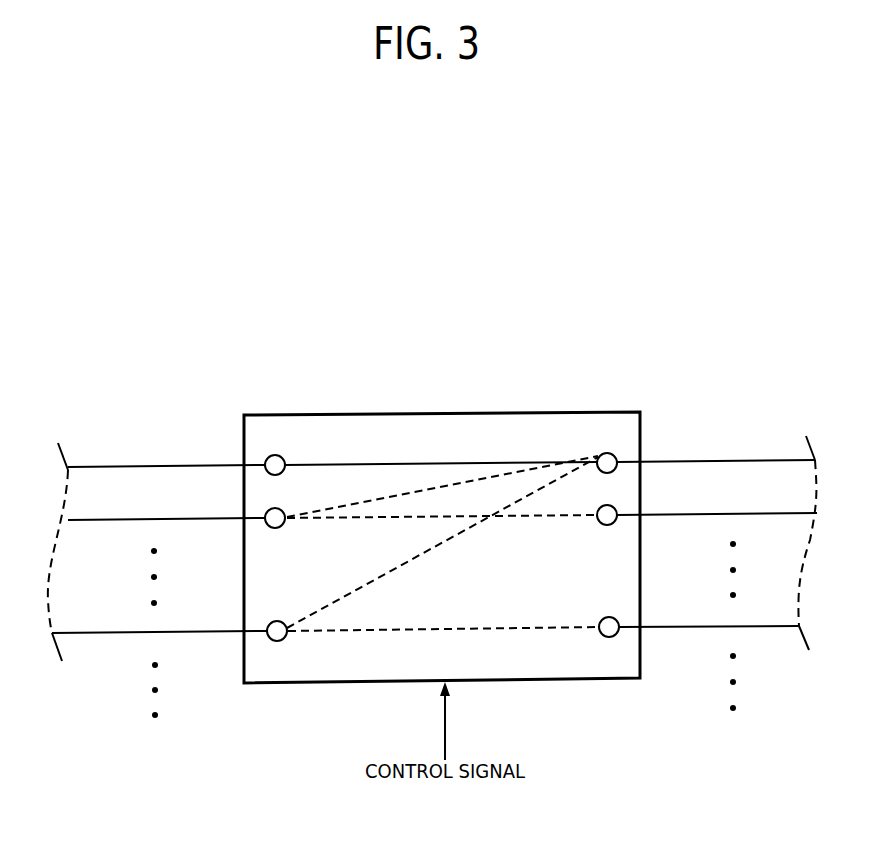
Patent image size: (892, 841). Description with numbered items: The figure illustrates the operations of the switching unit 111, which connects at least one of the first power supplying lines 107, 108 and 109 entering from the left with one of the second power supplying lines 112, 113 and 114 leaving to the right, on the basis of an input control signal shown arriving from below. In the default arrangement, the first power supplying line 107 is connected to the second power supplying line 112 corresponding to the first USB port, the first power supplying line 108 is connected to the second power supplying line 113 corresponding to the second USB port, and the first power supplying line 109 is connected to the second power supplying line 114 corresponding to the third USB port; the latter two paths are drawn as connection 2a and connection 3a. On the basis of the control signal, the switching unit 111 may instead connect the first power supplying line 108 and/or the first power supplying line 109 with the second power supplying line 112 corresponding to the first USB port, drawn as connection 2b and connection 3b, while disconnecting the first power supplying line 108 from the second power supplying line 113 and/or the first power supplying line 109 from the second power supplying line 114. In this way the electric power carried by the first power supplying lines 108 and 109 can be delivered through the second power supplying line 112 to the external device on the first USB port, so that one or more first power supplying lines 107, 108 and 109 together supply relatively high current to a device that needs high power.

The first power supplying line 107 is at (105, 467).
The first power supplying line 108 is at (185, 520).
The first power supplying line 109 is at (102, 634).
The switching unit 111 is at (442, 548).
The second power supplying line 112 is at (690, 460).
The second power supplying line 113 is at (768, 513).
The second power supplying line 114 is at (777, 627).
The connection 2a is at (577, 515).
The connection 2b is at (347, 506).
The connection 3a is at (553, 628).
The connection 3b is at (530, 496).